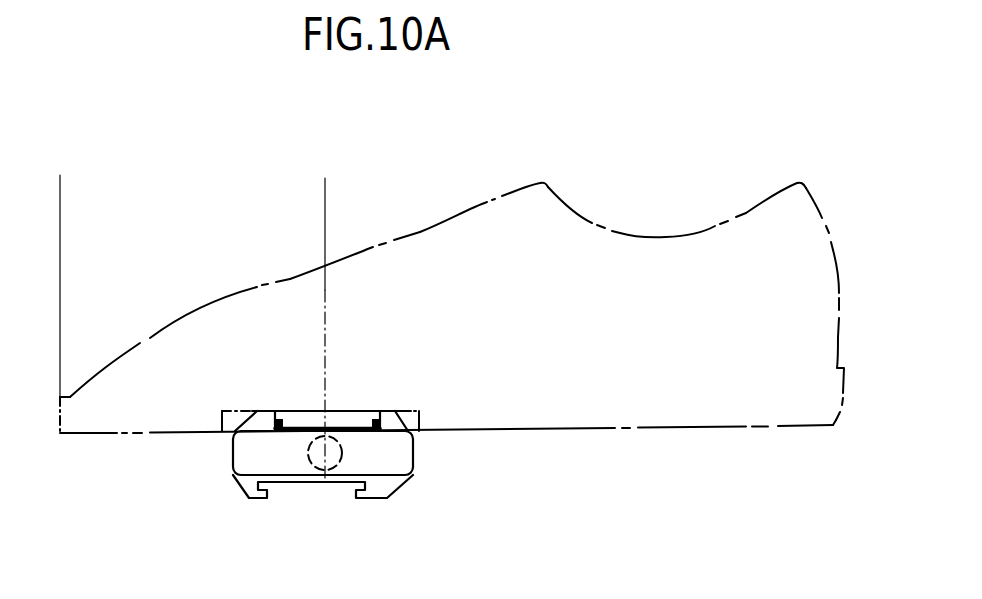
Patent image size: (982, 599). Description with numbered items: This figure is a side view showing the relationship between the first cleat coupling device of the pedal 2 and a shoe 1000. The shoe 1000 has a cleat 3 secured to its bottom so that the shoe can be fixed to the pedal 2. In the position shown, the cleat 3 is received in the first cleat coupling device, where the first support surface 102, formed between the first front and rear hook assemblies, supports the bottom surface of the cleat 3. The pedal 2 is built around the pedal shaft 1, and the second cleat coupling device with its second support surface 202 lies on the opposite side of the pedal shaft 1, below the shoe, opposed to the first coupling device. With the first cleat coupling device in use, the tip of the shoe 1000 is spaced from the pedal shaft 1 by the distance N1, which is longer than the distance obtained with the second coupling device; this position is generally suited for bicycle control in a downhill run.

The shoe 1000 is at (432, 222).
The distance N1 is at (322, 199).
The first support surface 102 is at (357, 422).
The cleat 3 is at (296, 430).
The pedal 2 is at (232, 474).
The second support surface 202 is at (308, 485).
The pedal shaft 1 is at (340, 468).